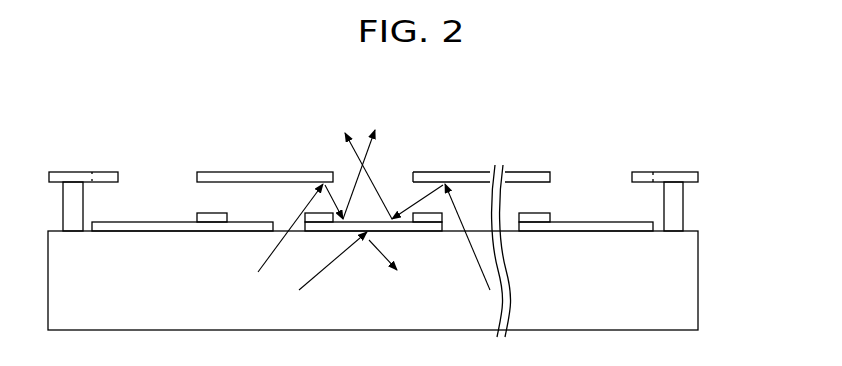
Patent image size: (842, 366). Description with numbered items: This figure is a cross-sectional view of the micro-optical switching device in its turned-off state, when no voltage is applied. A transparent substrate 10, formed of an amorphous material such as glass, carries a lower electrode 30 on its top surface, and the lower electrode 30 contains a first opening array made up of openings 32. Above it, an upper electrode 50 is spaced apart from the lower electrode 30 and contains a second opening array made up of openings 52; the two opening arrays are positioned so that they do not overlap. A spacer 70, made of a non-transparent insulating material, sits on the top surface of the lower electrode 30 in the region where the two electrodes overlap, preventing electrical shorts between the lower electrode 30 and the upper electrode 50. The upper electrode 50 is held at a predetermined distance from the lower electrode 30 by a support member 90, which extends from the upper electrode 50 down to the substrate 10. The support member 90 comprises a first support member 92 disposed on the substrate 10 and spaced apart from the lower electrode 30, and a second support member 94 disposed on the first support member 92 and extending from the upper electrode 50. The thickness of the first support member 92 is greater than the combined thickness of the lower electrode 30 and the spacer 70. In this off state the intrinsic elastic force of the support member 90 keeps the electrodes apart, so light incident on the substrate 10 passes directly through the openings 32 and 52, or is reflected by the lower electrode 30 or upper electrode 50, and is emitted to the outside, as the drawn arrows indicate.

The substrate 10 is at (698, 281).
The lower electrode 30 is at (595, 222).
The openings 32 is at (268, 220).
The upper electrode 50 is at (458, 173).
The openings 52 is at (160, 178).
The spacer 70 is at (537, 212).
The support member 90 is at (422, 199).
The first support member 92 is at (683, 212).
The second support member 94 is at (698, 178).